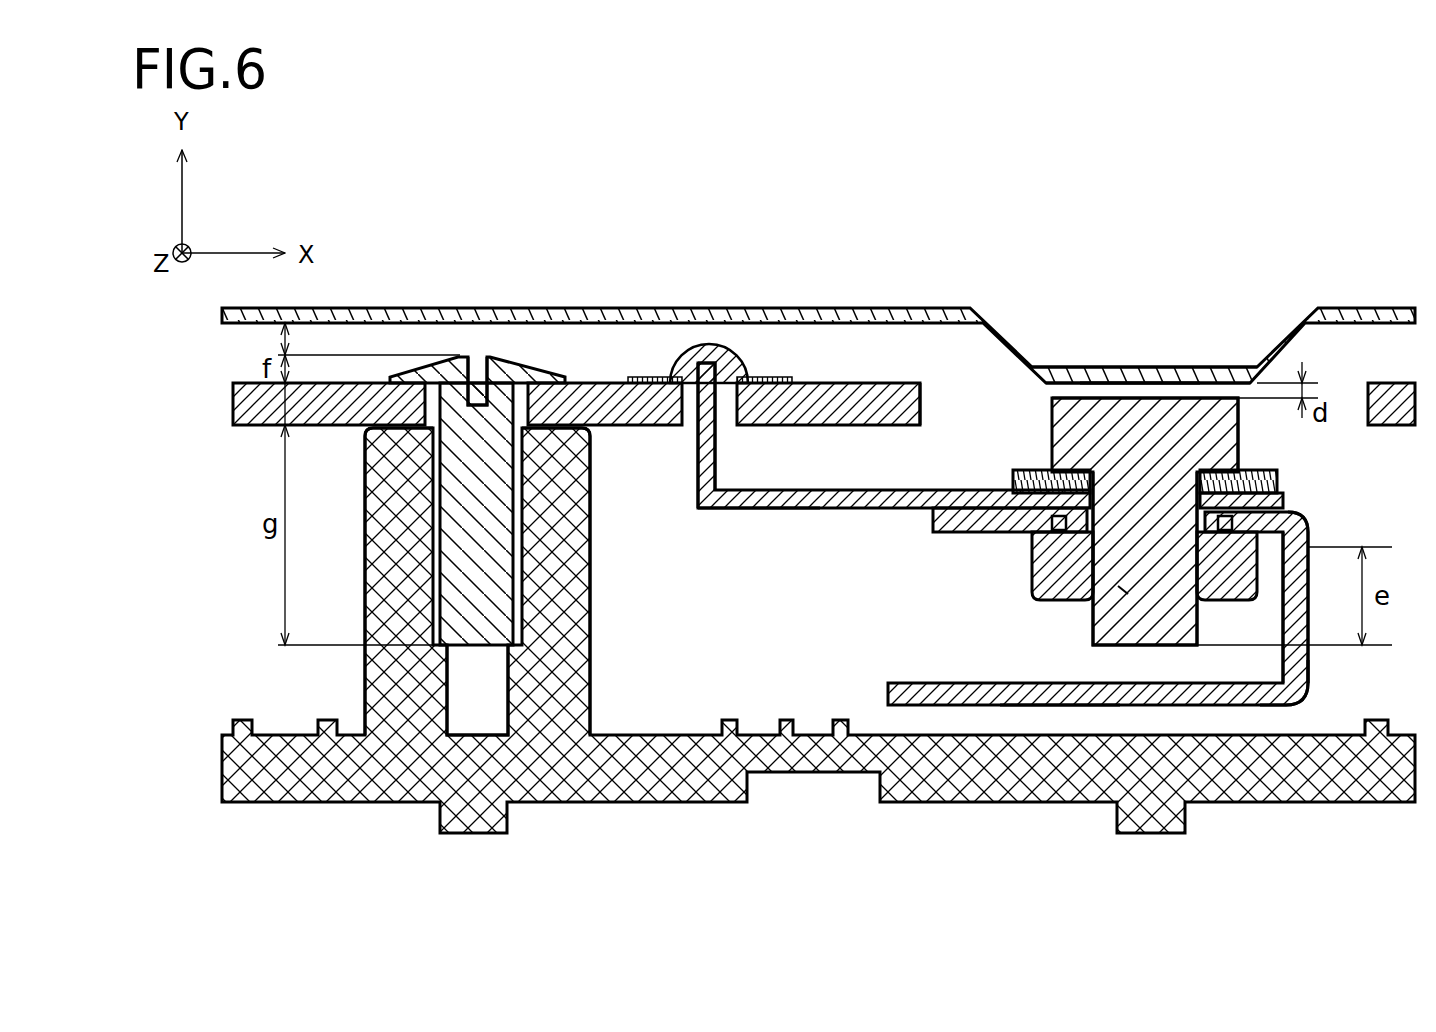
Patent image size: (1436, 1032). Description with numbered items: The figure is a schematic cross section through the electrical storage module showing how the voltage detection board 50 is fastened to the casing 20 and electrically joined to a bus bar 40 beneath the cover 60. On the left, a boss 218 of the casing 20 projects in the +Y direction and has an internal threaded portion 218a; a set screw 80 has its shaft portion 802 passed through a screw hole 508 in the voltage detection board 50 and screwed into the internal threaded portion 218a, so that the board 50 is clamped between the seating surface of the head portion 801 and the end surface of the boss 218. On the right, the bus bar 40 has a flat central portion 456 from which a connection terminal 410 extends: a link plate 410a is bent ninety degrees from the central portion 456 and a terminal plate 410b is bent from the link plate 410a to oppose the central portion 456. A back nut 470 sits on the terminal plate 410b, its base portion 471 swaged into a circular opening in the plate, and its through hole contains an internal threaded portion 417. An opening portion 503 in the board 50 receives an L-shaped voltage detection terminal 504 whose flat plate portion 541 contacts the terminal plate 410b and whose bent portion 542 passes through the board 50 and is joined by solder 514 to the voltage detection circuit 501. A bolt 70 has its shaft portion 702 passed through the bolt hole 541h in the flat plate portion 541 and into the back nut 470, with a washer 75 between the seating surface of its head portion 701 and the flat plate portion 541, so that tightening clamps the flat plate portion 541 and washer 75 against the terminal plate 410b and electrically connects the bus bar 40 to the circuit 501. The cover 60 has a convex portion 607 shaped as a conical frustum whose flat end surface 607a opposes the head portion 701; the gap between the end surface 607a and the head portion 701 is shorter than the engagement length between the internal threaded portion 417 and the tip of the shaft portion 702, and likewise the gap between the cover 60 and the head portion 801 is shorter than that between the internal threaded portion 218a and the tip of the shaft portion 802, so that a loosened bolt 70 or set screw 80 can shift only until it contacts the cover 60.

The casing 20 is at (818, 656).
The bus bar 40 is at (1136, 691).
The voltage detection board 50 is at (824, 328).
The cover 60 is at (818, 307).
The bolt 70 is at (1203, 591).
The washer 75 is at (1024, 468).
The set screw 80 is at (525, 445).
The boss 218 is at (595, 612).
The internal threaded portion 218a is at (458, 657).
The connection terminal 410 is at (1312, 530).
The link plate 410a is at (1309, 663).
The terminal plate 410b is at (957, 531).
The internal threaded portion 417 is at (1123, 590).
The central portion 456 is at (1052, 698).
The back nut 470 is at (1030, 577).
The base portion 471 is at (1062, 535).
The voltage detection circuit 501 is at (781, 377).
The opening portion 503 is at (924, 395).
The voltage detection terminal 504 is at (723, 512).
The screw hole 508 is at (509, 389).
The solder 514 is at (692, 350).
The flat plate portion 541 is at (1013, 483).
The bolt hole 541h is at (1278, 487).
The bent portion 542 is at (697, 460).
The convex portion 607 is at (1292, 348).
The end surface 607a is at (1121, 385).
The head portion 701 is at (1239, 430).
The shaft portion 702 is at (1140, 623).
The head portion 801 is at (432, 370).
The shaft portion 802 is at (500, 507).